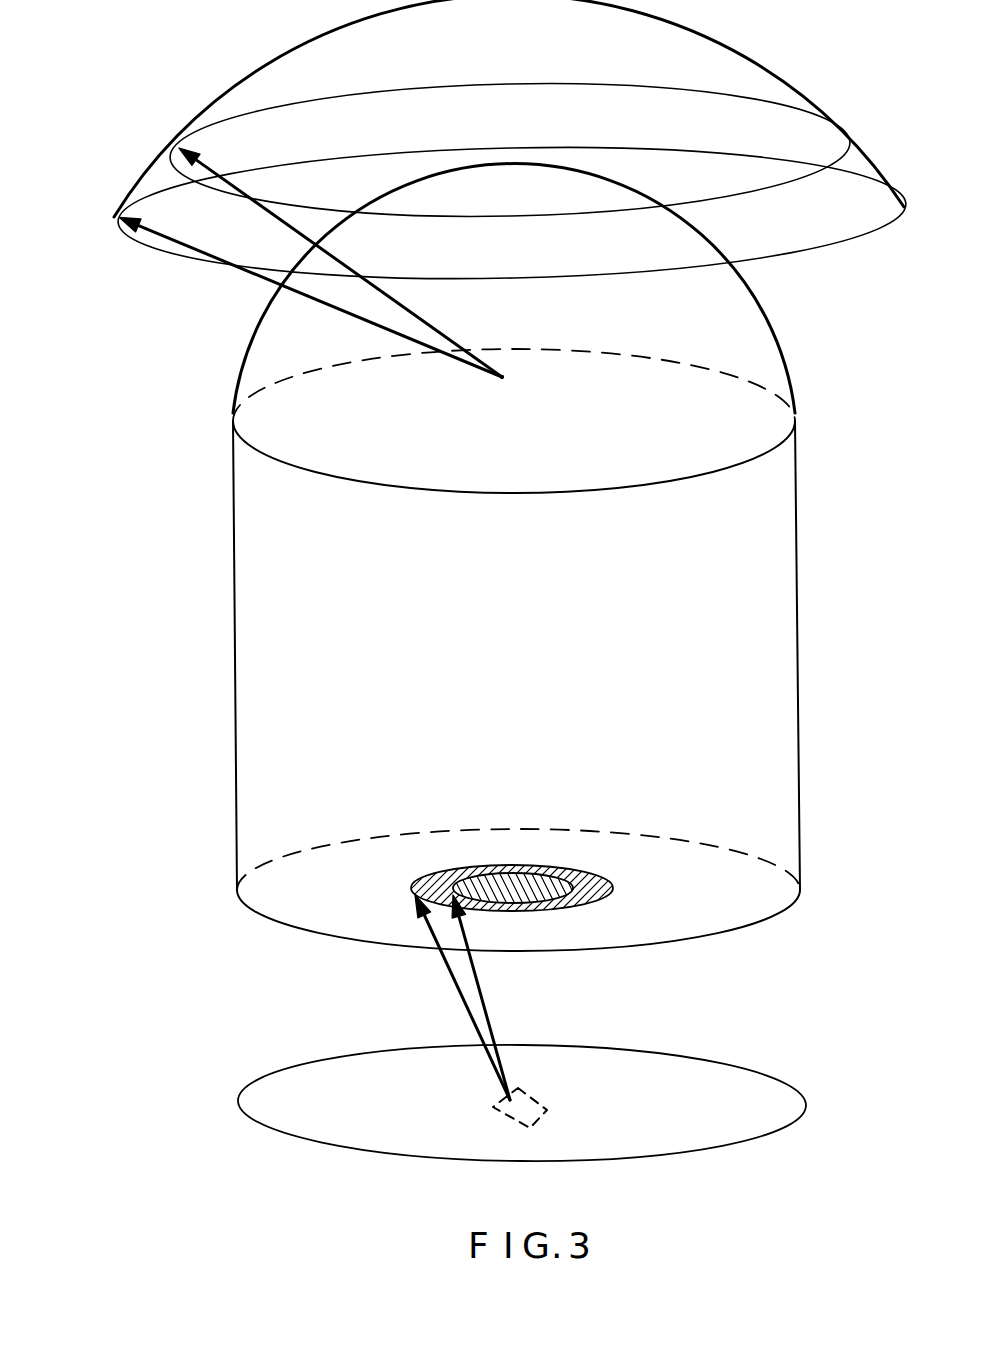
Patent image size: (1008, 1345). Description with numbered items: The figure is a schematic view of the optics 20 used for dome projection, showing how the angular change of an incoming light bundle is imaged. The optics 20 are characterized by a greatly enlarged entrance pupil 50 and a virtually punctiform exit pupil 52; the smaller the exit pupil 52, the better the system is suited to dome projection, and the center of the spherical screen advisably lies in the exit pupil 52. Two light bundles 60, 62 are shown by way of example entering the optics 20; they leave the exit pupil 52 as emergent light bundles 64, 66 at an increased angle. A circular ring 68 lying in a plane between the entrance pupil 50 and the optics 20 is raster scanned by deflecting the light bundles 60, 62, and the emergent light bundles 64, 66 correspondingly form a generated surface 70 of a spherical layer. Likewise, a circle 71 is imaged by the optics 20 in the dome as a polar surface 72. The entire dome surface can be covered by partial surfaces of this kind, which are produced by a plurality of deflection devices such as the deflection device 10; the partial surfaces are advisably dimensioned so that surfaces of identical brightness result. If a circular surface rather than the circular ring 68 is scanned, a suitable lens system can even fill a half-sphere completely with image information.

The deflection device 10 is at (537, 1100).
The optics 20 is at (785, 545).
The entrance pupil 50 is at (265, 1090).
The exit pupil 52 is at (505, 377).
The light bundle 60 is at (478, 980).
The light bundle 62 is at (447, 968).
The emergent light bundle 64 is at (423, 318).
The emergent light bundle 66 is at (347, 313).
The circular ring 68 is at (598, 900).
The generated surface of a spherical layer 70 is at (203, 210).
The circle 71 is at (570, 871).
The polar surface 72 is at (278, 68).